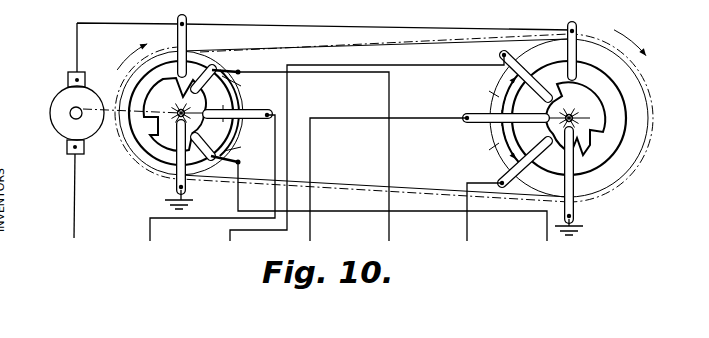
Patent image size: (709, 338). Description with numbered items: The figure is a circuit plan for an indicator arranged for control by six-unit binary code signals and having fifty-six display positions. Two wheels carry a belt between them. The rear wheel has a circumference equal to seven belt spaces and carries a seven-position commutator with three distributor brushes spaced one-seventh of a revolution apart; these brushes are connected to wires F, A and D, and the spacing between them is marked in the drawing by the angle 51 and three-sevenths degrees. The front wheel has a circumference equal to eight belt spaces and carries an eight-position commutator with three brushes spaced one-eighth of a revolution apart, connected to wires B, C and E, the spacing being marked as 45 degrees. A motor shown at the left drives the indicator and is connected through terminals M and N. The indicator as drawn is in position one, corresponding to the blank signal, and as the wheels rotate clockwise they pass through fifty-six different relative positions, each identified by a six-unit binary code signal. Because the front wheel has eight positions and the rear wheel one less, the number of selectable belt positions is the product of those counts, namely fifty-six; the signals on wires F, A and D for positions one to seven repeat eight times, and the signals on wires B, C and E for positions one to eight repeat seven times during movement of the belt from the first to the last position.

The motor positive supply terminal M is at (311, 44).
The motor negative supply terminal N is at (314, 188).
The wire A is at (202, 174).
The wire B is at (378, 151).
The wire C is at (416, 178).
The wire D is at (293, 155).
The wire E is at (495, 198).
The wire F is at (372, 196).
The 51 3/7 degree brush spacing angle 51 is at (270, 144).
The 45 degree brush spacing angle 45 is at (488, 119).